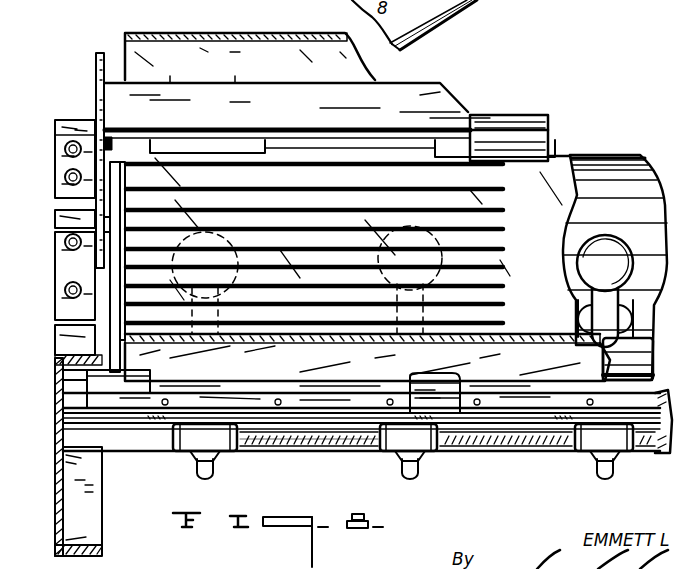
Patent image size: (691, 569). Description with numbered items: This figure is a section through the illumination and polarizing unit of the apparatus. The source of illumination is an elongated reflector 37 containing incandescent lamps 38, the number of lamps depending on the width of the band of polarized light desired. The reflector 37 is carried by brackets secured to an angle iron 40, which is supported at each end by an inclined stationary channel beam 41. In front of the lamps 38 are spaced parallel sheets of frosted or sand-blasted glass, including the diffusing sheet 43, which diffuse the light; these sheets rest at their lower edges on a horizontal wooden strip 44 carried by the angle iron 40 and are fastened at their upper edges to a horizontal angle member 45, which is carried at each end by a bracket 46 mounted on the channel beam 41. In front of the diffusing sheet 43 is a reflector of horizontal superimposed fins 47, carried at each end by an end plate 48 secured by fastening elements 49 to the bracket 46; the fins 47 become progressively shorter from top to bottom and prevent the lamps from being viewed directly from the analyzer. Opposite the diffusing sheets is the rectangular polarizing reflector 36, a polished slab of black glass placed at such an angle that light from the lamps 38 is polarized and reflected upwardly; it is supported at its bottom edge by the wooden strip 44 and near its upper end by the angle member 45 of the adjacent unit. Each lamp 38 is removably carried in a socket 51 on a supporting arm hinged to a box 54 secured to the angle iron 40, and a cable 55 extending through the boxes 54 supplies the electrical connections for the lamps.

The polarizing reflector 36 is at (250, 22).
The elongated reflector 37 is at (667, 178).
The incandescent lamps 38 is at (622, 278).
The angle iron 40 is at (168, 440).
The inclined stationary channel beam 41 is at (84, 506).
The sheet of frosted glass 43 is at (557, 172).
The horizontal wooden strip 44 is at (428, 393).
The horizontal angle member 45 is at (448, 92).
The bracket 46 is at (60, 151).
The fins 47 is at (492, 290).
The end plate 48 is at (110, 276).
The fastening elements 49 is at (118, 222).
The socket 51 is at (632, 345).
The box 54 is at (425, 446).
The cable 55 is at (312, 446).